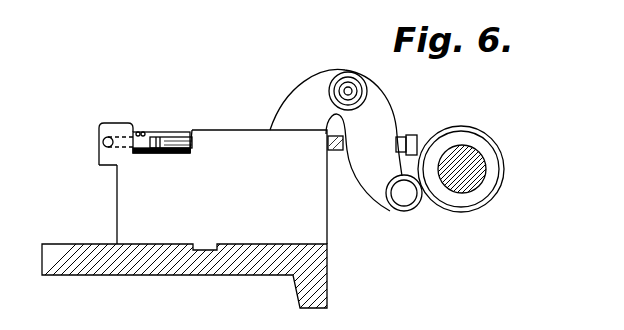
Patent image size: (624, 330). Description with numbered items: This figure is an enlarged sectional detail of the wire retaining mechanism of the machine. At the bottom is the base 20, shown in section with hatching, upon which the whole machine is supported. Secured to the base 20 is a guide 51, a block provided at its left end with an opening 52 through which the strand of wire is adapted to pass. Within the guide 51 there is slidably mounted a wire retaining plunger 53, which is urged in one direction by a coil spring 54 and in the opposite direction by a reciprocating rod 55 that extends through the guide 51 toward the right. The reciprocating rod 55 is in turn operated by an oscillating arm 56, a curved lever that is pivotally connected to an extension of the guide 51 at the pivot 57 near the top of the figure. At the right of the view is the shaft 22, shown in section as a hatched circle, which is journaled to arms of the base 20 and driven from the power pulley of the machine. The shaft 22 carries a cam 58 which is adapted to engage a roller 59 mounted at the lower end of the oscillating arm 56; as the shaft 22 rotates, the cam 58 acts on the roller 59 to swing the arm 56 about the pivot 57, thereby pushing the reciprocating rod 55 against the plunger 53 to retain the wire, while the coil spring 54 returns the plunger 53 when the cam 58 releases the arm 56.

The base 20 is at (78, 260).
The shaft 22 is at (480, 164).
The guide 51 is at (163, 170).
The opening 52 is at (104, 145).
The wire retaining plunger 53 is at (147, 132).
The coil spring 54 is at (139, 131).
The reciprocating rod 55 is at (194, 133).
The oscillating arm 56 is at (378, 118).
The pivot connection 57 is at (348, 86).
The cam 58 is at (451, 128).
The roller 59 is at (417, 209).